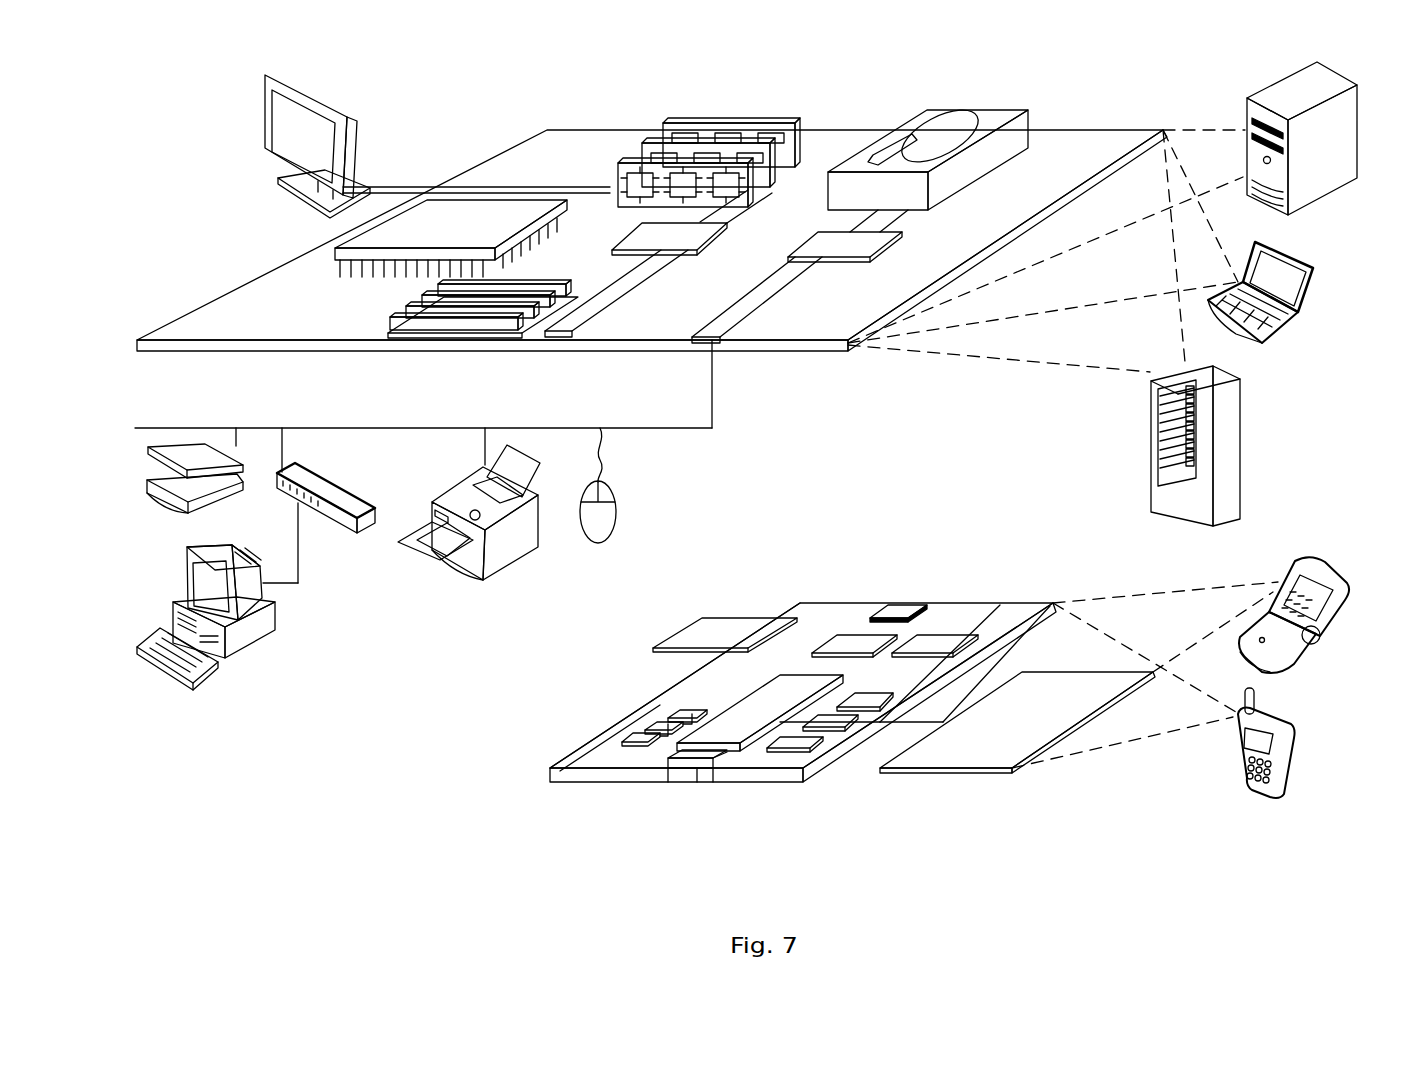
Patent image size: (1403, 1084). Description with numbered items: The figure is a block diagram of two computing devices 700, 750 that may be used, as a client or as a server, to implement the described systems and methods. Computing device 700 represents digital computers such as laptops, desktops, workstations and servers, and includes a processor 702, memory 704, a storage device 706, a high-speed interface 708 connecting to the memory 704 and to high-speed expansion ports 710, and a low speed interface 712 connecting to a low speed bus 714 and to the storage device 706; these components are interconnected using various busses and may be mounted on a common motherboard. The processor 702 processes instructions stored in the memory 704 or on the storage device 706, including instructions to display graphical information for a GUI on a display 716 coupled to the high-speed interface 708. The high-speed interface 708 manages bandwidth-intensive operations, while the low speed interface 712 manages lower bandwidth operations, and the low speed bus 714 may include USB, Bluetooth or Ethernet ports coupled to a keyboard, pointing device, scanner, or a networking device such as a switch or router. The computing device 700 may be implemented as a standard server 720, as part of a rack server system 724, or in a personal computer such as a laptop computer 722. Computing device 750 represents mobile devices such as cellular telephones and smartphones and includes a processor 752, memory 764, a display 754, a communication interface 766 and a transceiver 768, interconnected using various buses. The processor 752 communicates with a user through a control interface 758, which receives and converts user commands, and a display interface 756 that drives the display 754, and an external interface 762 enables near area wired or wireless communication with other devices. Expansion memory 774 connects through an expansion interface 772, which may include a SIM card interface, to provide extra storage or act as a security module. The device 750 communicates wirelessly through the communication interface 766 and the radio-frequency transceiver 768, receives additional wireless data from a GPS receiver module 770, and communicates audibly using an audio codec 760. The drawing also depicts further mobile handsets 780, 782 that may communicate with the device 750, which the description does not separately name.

The computing device 700 is at (466, 102).
The processor 702 is at (335, 252).
The memory 704 is at (677, 122).
The storage device 706 is at (923, 110).
The high-speed interface 708 is at (600, 215).
The high-speed expansion ports 710 is at (407, 312).
The low speed interface 712 is at (825, 240).
The low speed bus 714 is at (714, 342).
The display 716 is at (270, 78).
The standard server 720 is at (1246, 116).
The laptop computer 722 is at (1313, 268).
The rack server system 724 is at (1150, 468).
The computing device 750 is at (524, 781).
The processor 752 is at (733, 736).
The display 754 is at (977, 755).
The display interface 756 is at (803, 744).
The control interface 758 is at (837, 724).
The audio codec 760 is at (862, 703).
The external interface 762 is at (697, 770).
The memory 764 is at (643, 727).
The communication interface 766 is at (853, 642).
The transceiver 768 is at (935, 640).
The GPS receiver module 770 is at (907, 603).
The expansion interface 772 is at (783, 615).
The expansion memory 774 is at (703, 618).
The cellular phone 780 is at (1293, 562).
The mobile phone 782 is at (1232, 748).